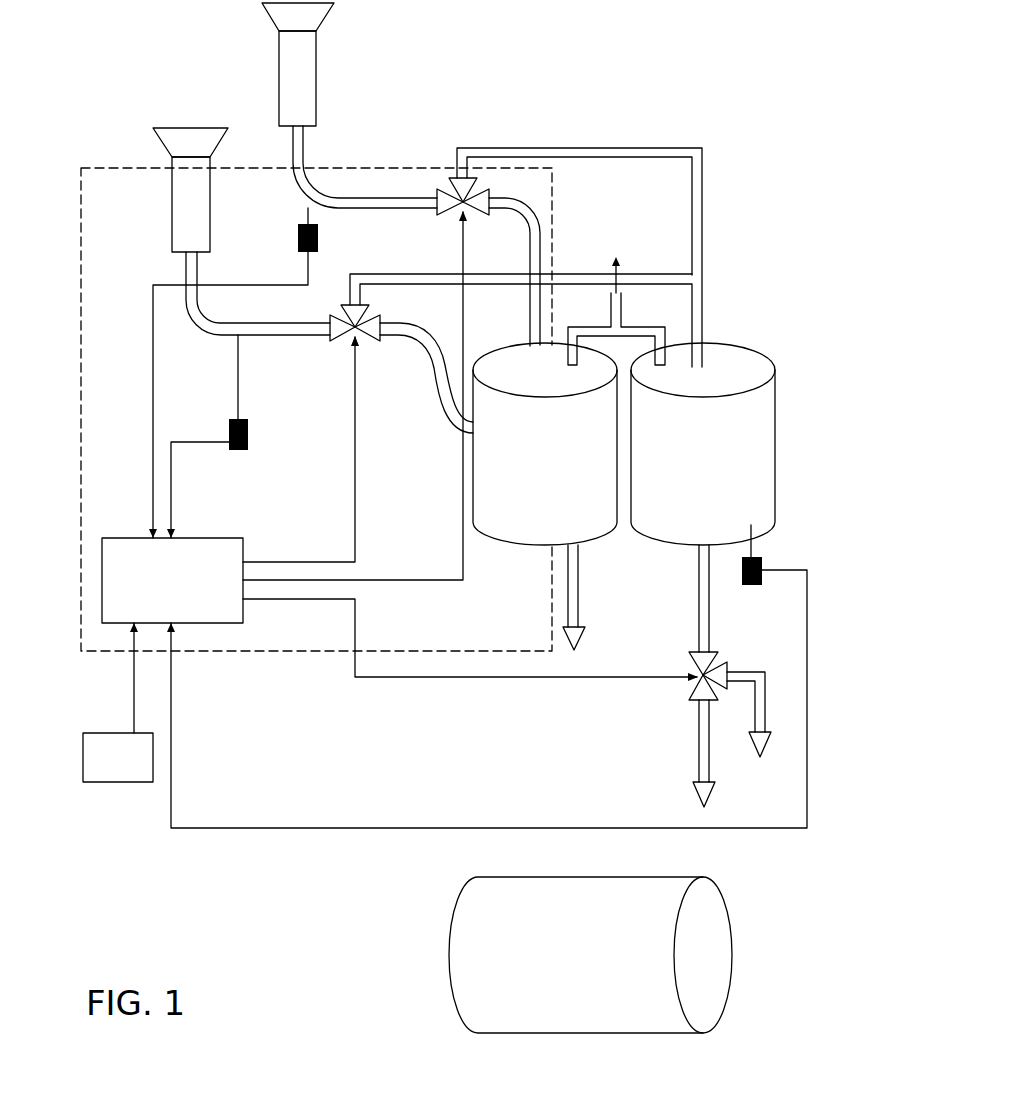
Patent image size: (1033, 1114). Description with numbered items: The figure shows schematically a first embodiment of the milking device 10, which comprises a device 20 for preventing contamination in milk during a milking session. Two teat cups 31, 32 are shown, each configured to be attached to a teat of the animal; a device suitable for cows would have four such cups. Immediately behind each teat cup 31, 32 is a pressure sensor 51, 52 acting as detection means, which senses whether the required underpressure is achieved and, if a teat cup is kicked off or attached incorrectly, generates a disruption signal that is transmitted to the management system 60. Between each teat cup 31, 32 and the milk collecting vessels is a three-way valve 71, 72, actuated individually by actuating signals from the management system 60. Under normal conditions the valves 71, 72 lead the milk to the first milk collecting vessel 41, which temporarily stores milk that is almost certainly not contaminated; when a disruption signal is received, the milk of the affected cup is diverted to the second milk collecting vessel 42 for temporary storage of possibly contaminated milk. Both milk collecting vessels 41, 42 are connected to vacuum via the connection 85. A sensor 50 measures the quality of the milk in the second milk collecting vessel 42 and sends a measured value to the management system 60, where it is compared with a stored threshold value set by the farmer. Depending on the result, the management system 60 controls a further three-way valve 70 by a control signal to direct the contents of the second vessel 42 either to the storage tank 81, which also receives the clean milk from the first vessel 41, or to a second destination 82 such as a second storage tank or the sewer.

The milking device 10 is at (614, 101).
The device for preventing contamination in milk 20 is at (551, 263).
The teat cup 31 is at (140, 252).
The teat cup 32 is at (355, 3).
The first milk collecting vessel 41 is at (545, 444).
The second milk collecting vessel 42 is at (703, 444).
The sensor 50 is at (762, 565).
The pressure sensor 51 is at (248, 432).
The pressure sensor 52 is at (318, 238).
The management system 60 is at (390, 496).
The three-way valve 70 is at (704, 657).
The three-way valve 71 is at (373, 330).
The three-way valve 72 is at (442, 192).
The storage tank 81 is at (590, 789).
The second destination 82 is at (753, 733).
The connection 85 is at (616, 301).